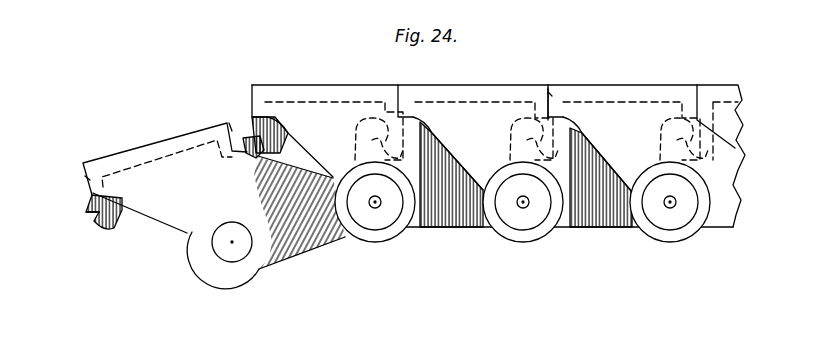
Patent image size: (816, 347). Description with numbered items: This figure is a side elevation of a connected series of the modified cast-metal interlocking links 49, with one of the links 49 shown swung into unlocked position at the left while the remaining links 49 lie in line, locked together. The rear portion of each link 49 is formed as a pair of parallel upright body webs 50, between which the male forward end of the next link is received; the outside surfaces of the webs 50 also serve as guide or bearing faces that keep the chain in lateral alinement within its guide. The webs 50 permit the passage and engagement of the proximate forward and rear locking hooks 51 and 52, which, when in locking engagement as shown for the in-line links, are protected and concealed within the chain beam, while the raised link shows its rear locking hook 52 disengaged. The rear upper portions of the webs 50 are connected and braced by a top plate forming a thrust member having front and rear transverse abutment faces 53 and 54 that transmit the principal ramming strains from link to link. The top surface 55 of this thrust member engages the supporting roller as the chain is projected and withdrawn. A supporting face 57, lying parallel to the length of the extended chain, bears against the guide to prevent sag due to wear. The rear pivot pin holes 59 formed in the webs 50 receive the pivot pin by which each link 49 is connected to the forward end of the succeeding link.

The interlocking link 49 is at (496, 258).
The parallel webs 50 is at (172, 218).
The forward locking hook 51 is at (355, 132).
The rear locking hook 52 is at (97, 227).
The front transverse abutment face 53 is at (236, 116).
The rear transverse abutment face 54 is at (85, 178).
The top surface of the thrust member 55 is at (150, 148).
The supporting face 57 is at (90, 205).
The rear pivot pin hole 59 is at (220, 254).